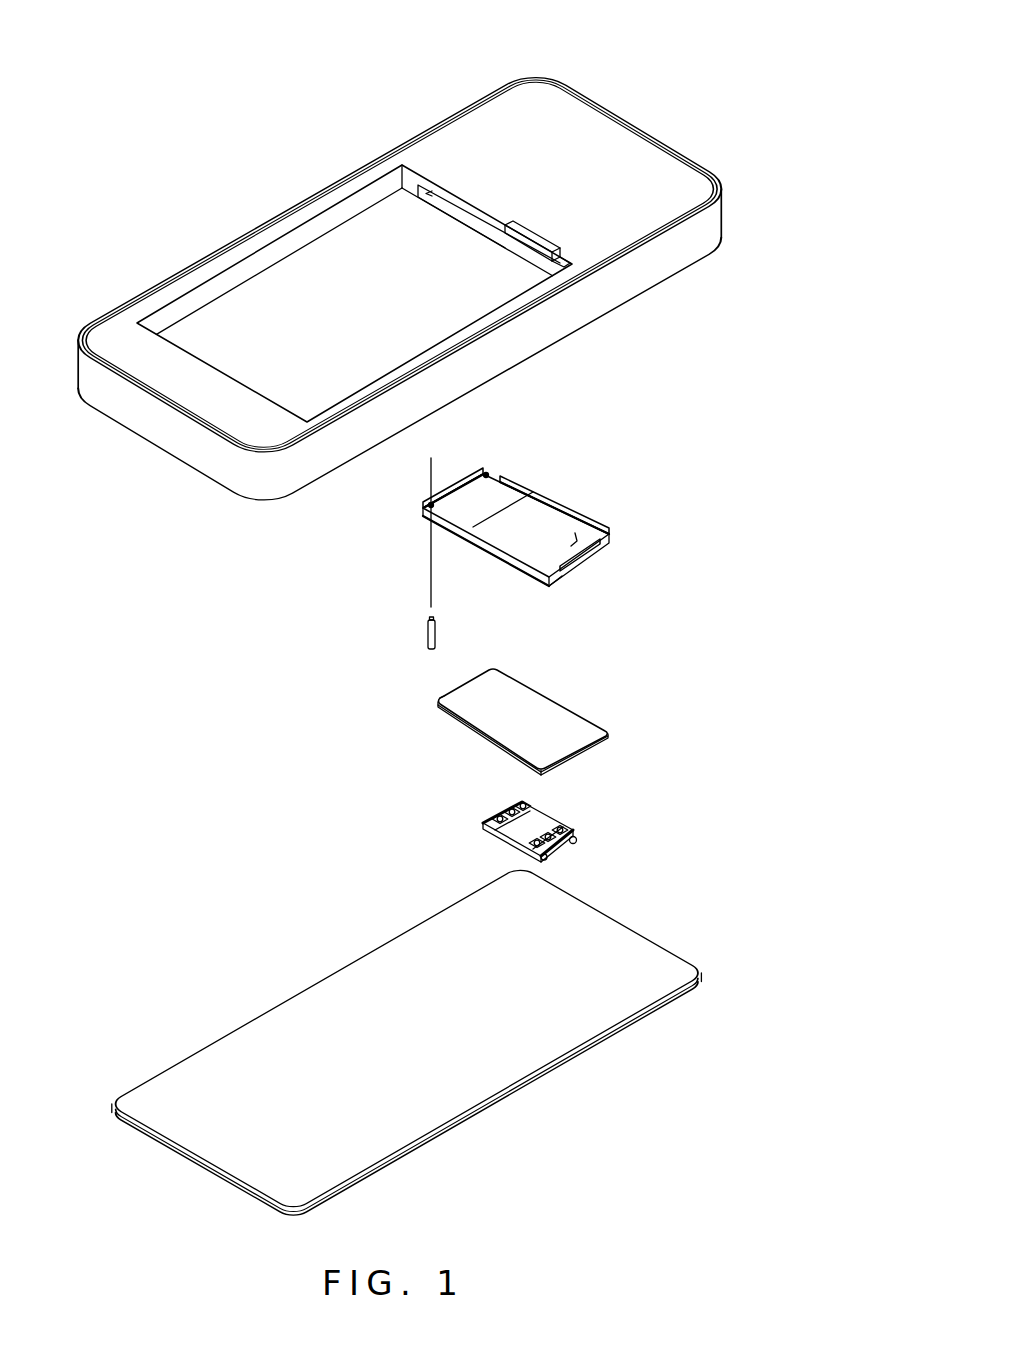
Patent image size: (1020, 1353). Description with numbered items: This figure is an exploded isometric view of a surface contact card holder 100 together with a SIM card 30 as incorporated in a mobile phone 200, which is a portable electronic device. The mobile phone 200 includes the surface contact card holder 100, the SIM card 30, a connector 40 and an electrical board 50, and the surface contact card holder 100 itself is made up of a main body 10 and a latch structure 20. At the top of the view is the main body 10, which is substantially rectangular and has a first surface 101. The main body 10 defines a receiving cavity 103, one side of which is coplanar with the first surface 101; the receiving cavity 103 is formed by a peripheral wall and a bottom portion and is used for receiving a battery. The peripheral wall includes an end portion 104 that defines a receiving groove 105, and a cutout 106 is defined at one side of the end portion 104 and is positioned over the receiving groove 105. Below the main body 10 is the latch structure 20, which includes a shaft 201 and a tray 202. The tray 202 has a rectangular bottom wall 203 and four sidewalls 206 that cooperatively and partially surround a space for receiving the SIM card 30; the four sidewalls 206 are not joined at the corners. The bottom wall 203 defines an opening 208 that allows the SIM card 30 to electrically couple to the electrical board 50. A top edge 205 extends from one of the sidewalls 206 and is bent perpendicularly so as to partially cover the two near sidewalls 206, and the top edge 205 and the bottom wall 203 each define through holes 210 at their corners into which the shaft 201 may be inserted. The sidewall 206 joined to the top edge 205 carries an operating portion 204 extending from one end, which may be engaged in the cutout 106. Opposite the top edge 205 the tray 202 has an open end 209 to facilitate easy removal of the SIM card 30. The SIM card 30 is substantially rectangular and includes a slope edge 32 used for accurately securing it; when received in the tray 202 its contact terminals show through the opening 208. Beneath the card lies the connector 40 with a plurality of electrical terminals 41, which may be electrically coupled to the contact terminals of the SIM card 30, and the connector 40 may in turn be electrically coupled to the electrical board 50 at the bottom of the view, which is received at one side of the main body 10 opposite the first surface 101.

The mobile phone 200 is at (392, 14).
The surface contact card holder 100 is at (740, 70).
The main body 10 is at (652, 112).
The first surface 101 is at (475, 132).
The receiving cavity 103 is at (283, 297).
The end portion 104 is at (413, 186).
The receiving groove 105 is at (498, 235).
The cutout 106 is at (547, 240).
The latch structure 20 is at (641, 602).
The shaft 201 is at (438, 637).
The tray 202 is at (552, 599).
The bottom wall 203 is at (464, 522).
The operating portion 204 is at (527, 568).
The top edge 205 is at (458, 490).
The sidewalls 206 is at (485, 473).
The opening 208 is at (573, 537).
The open end 209 is at (567, 573).
The through holes 210 is at (430, 505).
The SIM card 30 is at (558, 725).
The slope edge 32 is at (419, 722).
The connector 40 is at (543, 823).
The electrical terminals 41 is at (527, 805).
The electrical board 50 is at (626, 961).